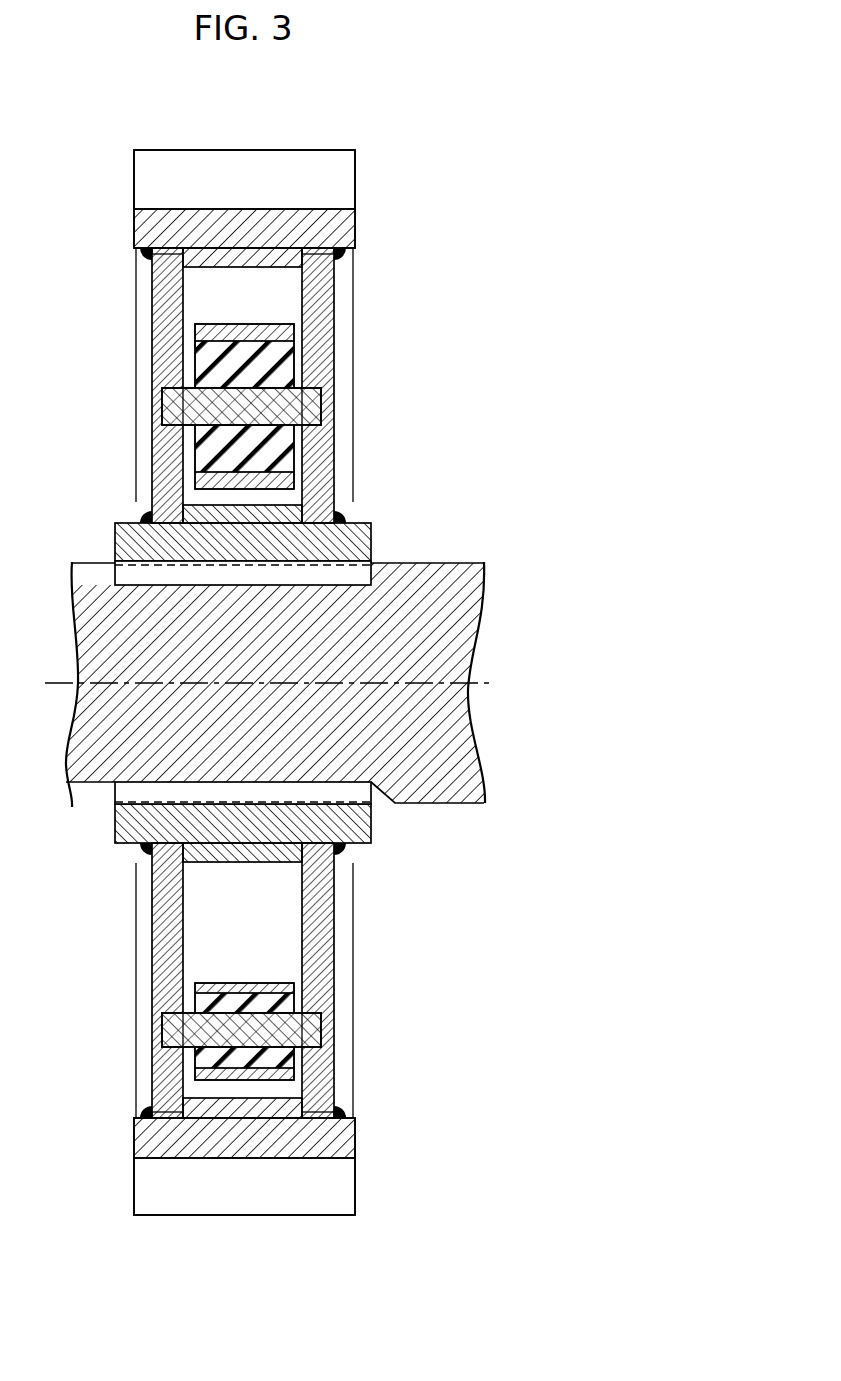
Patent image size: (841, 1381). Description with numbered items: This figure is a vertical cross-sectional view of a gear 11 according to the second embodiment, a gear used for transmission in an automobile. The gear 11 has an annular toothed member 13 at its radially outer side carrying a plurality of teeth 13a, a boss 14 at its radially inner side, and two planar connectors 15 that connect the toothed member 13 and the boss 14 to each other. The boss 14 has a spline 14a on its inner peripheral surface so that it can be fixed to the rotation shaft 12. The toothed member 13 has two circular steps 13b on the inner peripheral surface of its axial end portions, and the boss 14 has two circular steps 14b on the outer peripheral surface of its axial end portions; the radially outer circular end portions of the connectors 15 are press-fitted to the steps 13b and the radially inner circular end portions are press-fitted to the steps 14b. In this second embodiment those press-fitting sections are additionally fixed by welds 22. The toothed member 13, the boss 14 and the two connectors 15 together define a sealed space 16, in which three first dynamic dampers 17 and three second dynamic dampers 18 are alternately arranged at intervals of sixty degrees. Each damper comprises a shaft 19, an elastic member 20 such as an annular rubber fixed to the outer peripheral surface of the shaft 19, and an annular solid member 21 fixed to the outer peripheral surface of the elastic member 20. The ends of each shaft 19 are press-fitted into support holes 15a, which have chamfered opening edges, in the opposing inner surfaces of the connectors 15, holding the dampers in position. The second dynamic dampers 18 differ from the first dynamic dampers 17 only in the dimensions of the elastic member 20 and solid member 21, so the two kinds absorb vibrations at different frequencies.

The gear 11 is at (456, 341).
The rotation shaft 12 is at (422, 575).
The annular toothed member 13 is at (357, 231).
The teeth 13a is at (320, 160).
The steps 13b is at (182, 257).
The boss 14 is at (380, 526).
The spline 14a is at (135, 572).
The steps 14b is at (178, 512).
The planar connectors 15 is at (150, 412).
The support holes 15a is at (165, 398).
The sealed space 16 is at (232, 303).
The first dynamic dampers 17 is at (256, 322).
The second dynamic dampers 18 is at (254, 981).
The shaft 19 is at (232, 418).
The elastic member 20 is at (290, 358).
The annular solid member 21 is at (296, 329).
The welds 22 is at (147, 258).